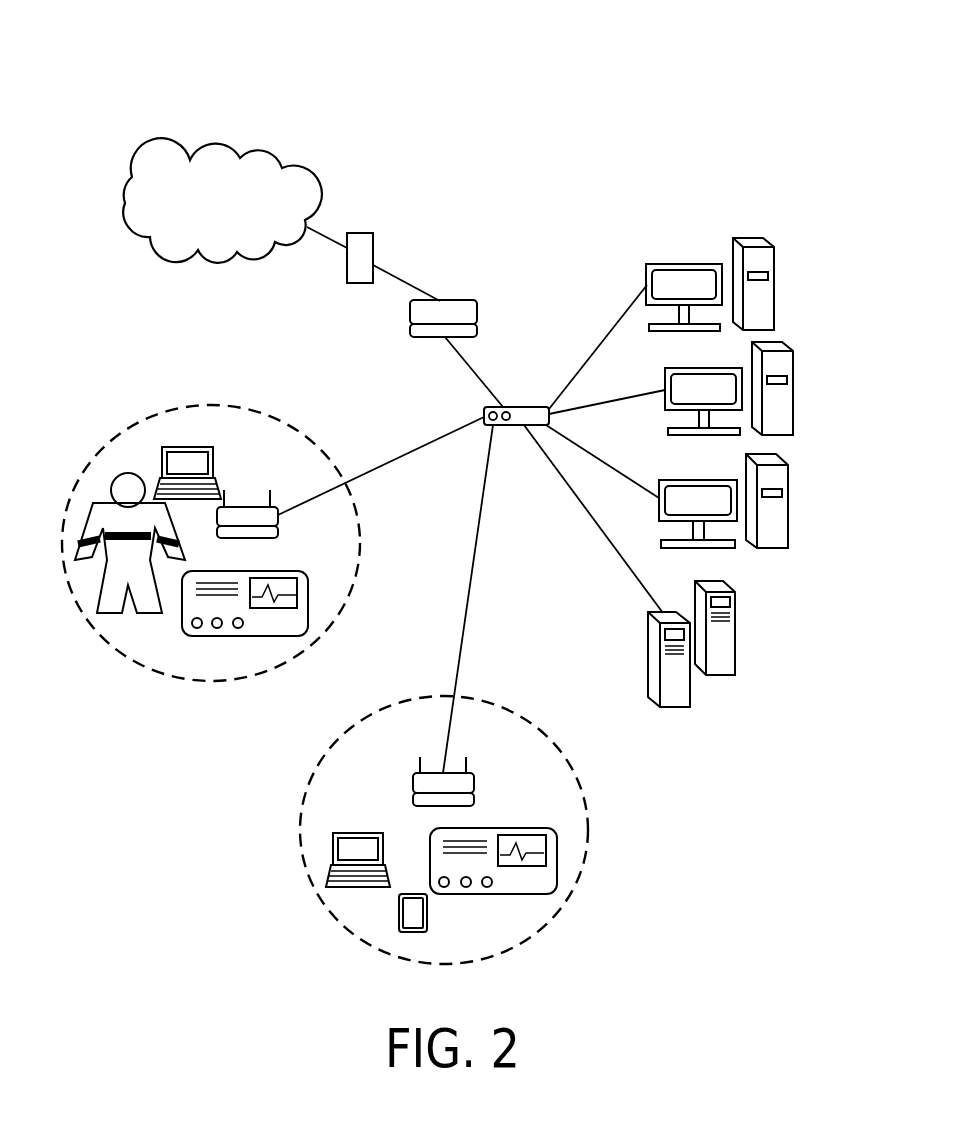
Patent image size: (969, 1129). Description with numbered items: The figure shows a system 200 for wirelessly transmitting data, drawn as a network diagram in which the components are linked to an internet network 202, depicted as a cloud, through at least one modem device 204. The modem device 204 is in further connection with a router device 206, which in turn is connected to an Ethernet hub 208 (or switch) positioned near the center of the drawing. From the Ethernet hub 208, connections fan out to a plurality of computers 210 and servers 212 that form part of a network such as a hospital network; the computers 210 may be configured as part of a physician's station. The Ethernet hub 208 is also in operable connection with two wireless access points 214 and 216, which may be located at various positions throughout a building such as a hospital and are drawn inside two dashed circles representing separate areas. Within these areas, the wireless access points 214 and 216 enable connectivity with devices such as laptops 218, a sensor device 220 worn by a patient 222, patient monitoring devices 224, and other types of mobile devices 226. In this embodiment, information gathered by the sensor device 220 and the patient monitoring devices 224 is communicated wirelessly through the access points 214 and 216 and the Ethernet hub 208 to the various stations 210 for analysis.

The system 200 is at (122, 96).
The internet network 202 is at (260, 147).
The modem device 204 is at (362, 232).
The router device 206 is at (460, 301).
The Ethernet hub 208 is at (525, 407).
The computers 210 is at (788, 268).
The servers 212 is at (737, 640).
The wireless access point 214 is at (248, 507).
The wireless access point 216 is at (475, 784).
The laptop 218 is at (190, 447).
The sensor device 220 is at (122, 545).
The patient 222 is at (112, 475).
The patient monitoring device 224 is at (308, 617).
The mobile device 226 is at (428, 911).